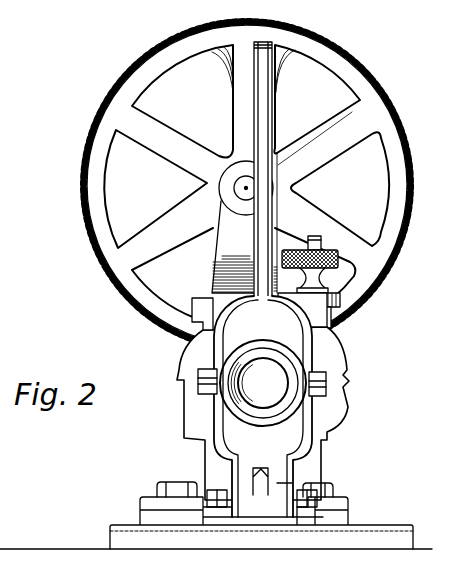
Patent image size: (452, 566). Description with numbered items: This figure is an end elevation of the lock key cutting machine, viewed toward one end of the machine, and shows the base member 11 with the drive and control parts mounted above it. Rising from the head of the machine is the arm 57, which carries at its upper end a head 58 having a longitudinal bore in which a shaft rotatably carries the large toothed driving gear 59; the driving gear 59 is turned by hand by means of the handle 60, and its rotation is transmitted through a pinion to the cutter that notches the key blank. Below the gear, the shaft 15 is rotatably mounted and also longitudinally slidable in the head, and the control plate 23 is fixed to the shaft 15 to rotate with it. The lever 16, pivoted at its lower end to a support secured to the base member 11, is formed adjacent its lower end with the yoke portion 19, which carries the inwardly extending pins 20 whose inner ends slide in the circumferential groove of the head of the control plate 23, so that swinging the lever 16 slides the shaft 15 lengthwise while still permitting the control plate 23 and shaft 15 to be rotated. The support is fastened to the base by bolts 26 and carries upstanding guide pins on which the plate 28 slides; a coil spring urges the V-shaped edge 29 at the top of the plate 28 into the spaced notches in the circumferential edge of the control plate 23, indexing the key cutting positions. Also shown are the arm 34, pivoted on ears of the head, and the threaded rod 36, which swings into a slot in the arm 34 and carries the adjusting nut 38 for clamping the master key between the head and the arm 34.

The base member 11 is at (445, 511).
The shaft 15 is at (263, 383).
The lever 16 is at (265, 117).
The yoke portion 19 is at (212, 357).
The inwardly extending pins 20 is at (219, 388).
The control plate 23 is at (330, 410).
The bolts 26 is at (334, 488).
The plate 28 is at (280, 486).
The V-shaped edge 29 is at (260, 465).
The arm 34 is at (218, 303).
The threaded rod 36 is at (307, 238).
The adjusting nut 38 is at (341, 265).
The arm 57 is at (233, 242).
The head 58 is at (155, 189).
The driving gear 59 is at (357, 82).
The handle 60 is at (182, 101).